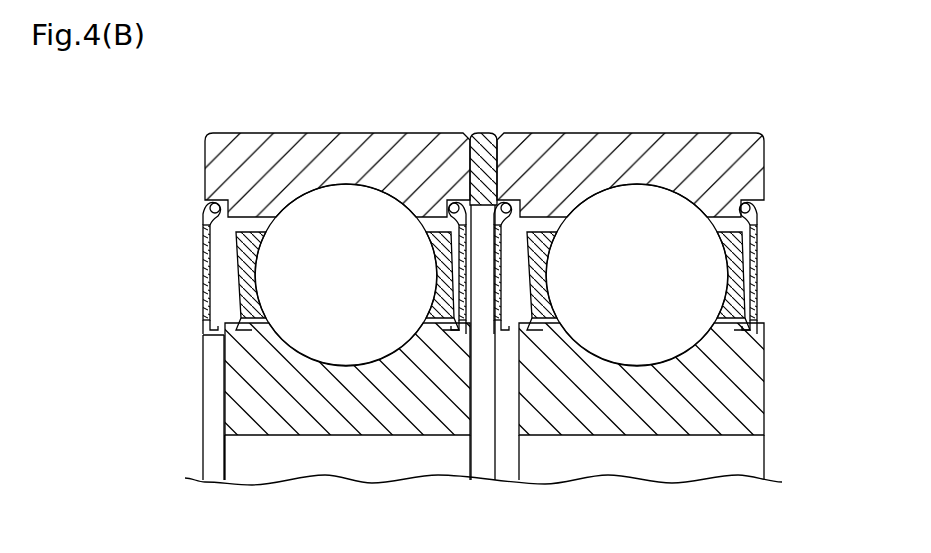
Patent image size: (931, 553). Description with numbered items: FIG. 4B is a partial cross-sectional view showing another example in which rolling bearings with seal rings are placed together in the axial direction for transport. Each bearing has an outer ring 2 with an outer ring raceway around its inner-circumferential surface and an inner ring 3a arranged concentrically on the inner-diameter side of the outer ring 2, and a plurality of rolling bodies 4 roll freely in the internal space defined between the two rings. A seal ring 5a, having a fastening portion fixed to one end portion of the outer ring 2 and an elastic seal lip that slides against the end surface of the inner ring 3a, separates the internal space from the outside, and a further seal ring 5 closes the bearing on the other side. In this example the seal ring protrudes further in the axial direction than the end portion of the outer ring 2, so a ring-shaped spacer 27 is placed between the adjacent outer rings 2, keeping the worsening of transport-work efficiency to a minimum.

The outer ring 2 is at (290, 168).
The inner ring 3a is at (342, 409).
The rolling bodies 4 is at (354, 222).
The seal ring 5 is at (456, 254).
The seal ring 5a is at (201, 276).
The ring-shaped spacer 27 is at (485, 148).